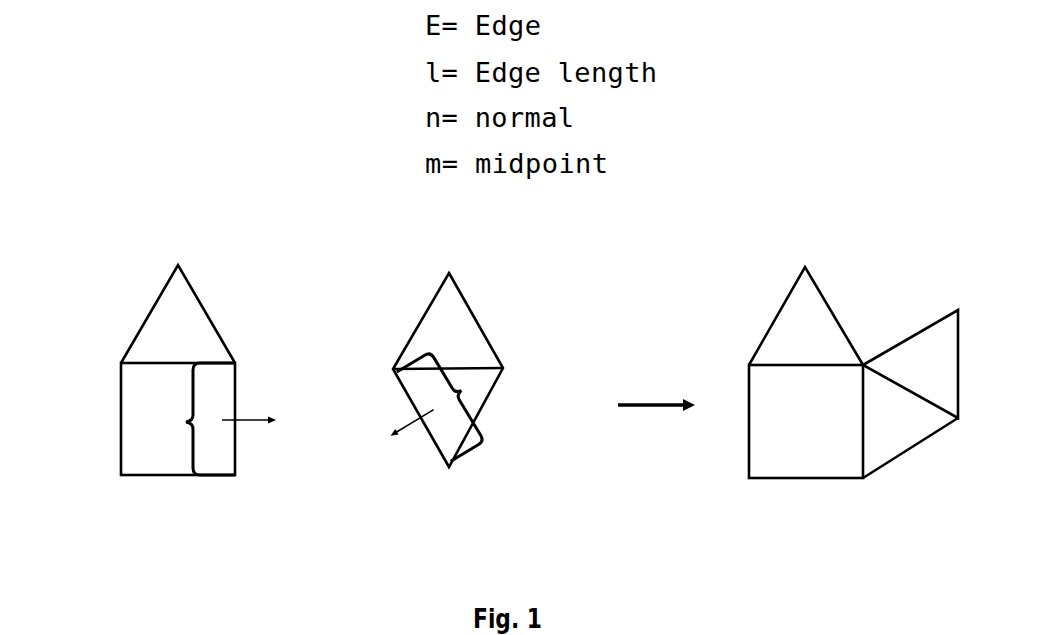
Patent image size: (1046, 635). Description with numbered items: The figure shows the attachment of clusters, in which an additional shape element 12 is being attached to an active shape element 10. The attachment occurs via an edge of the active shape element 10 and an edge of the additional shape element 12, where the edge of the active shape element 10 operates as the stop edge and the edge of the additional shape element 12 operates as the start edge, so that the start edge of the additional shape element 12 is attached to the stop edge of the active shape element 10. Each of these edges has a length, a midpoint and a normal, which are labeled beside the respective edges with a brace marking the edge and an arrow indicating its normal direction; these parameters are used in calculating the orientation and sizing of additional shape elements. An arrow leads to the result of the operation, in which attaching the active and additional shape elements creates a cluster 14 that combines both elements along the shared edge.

The active shape element 10 is at (120, 408).
The additional shape element 12 is at (435, 445).
The cluster 14 is at (763, 478).